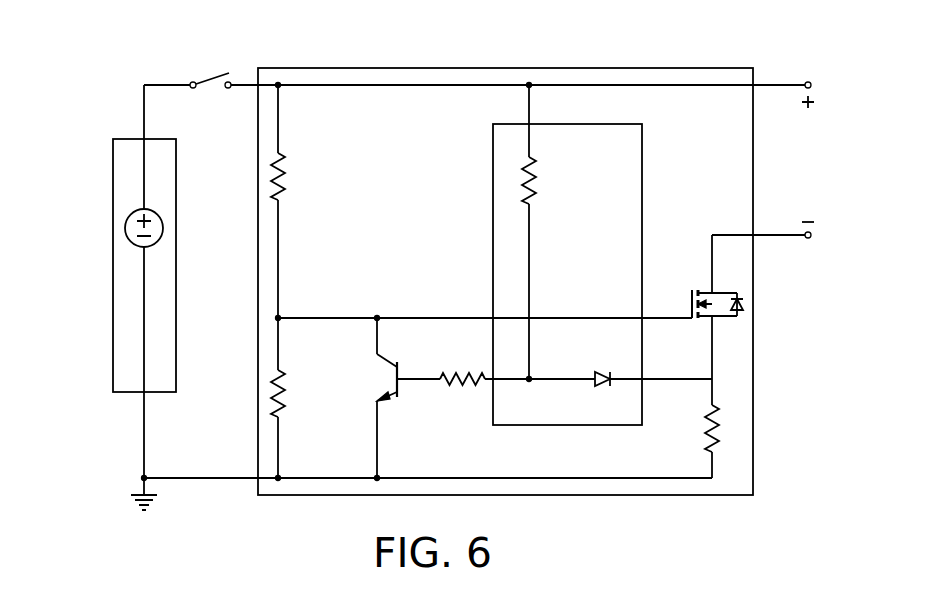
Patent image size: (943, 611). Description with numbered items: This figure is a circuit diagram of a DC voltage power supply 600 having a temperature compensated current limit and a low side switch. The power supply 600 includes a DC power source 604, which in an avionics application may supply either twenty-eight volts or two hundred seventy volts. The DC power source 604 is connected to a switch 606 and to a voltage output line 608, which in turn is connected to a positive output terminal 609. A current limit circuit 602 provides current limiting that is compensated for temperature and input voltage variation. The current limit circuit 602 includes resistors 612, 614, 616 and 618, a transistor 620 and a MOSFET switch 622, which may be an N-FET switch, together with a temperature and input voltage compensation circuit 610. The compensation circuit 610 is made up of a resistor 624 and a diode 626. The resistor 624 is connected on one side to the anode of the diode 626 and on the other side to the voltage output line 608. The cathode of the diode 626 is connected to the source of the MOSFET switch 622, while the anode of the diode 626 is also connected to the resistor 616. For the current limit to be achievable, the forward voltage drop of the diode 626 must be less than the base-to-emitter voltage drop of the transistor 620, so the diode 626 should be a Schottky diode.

The DC voltage power supply 600 is at (116, 106).
The current limit circuit 602 is at (753, 462).
The DC power source 604 is at (113, 365).
The switch 606 is at (231, 89).
The voltage output line 608 is at (340, 84).
The positive output terminal 609 is at (808, 82).
The temperature and input voltage compensation circuit 610 is at (493, 152).
The resistor 612 is at (283, 155).
The resistor 614 is at (273, 378).
The resistor 616 is at (465, 386).
The resistor 618 is at (705, 446).
The transistor 620 is at (385, 364).
The MOSFET switch 622 is at (710, 290).
The resistor 624 is at (535, 203).
The diode 626 is at (592, 383).